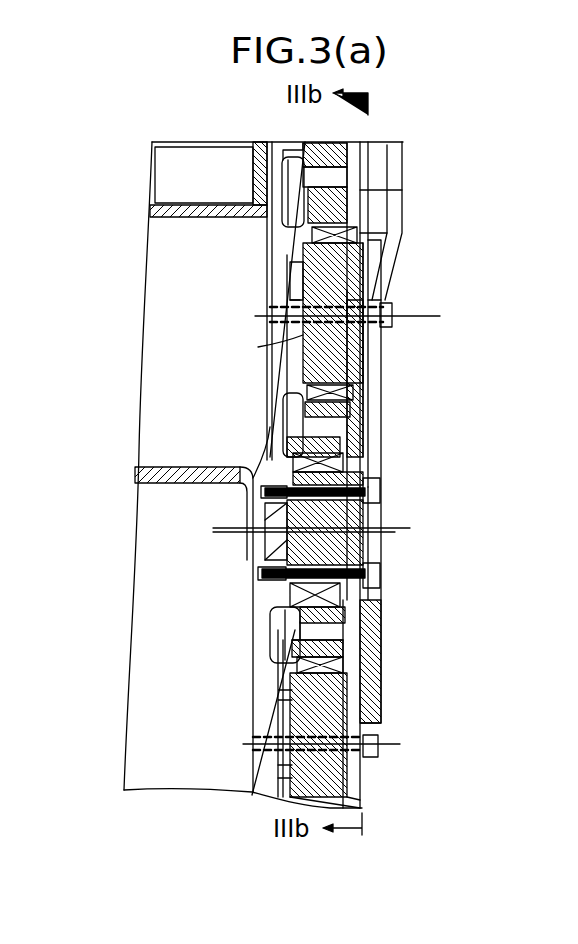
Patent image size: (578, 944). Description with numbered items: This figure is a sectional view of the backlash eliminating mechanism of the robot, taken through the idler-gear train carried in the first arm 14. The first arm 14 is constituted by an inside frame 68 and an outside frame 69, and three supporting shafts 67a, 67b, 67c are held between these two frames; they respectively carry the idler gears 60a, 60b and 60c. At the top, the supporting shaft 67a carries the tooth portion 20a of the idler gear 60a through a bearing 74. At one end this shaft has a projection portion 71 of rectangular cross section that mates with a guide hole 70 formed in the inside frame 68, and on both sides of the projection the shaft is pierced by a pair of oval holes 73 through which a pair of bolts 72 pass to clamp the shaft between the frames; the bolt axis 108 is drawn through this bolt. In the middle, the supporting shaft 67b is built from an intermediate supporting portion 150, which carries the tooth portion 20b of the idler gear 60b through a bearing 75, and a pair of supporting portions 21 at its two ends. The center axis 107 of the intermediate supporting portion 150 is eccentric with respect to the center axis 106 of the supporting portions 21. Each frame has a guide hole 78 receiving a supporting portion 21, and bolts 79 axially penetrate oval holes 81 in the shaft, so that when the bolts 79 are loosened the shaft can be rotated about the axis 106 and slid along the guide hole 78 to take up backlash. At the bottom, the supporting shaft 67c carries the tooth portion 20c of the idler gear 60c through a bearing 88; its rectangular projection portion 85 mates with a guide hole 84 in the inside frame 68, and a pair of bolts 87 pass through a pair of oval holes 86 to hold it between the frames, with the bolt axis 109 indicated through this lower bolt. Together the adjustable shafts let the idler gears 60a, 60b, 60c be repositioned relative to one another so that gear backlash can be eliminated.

The first arm 14 is at (150, 347).
The tooth portion 20a is at (360, 190).
The tooth portion 20b is at (273, 440).
The tooth portion 20c is at (380, 640).
The supporting portions 21 is at (270, 520).
The idler gear 60a is at (389, 254).
The idler gear 60b is at (364, 435).
The idler gear 60c is at (369, 665).
The supporting shaft 67a is at (359, 362).
The supporting shaft 67b is at (376, 560).
The supporting shaft 67c is at (347, 715).
The inside frame 68 is at (307, 152).
The outside frame 69 is at (392, 153).
The guide hole 70 is at (292, 277).
The projection portion 71 is at (300, 300).
The bolts 72 is at (385, 302).
The oval holes 73 is at (256, 347).
The bearing 74 is at (310, 237).
The bearing 75 is at (352, 456).
The guide hole 78 is at (360, 620).
The bolts 79 is at (372, 492).
The holes 81 is at (295, 468).
The guide hole 84 is at (283, 703).
The projection portion 85 is at (283, 767).
The oval holes 86 is at (363, 797).
The bolts 87 is at (380, 762).
The bearing 88 is at (275, 655).
The center axis 106 is at (397, 531).
The center axis 107 is at (410, 528).
The bolt axis 108 is at (440, 316).
The bolt axis 109 is at (400, 744).
The intermediate supporting portion 150 is at (270, 550).